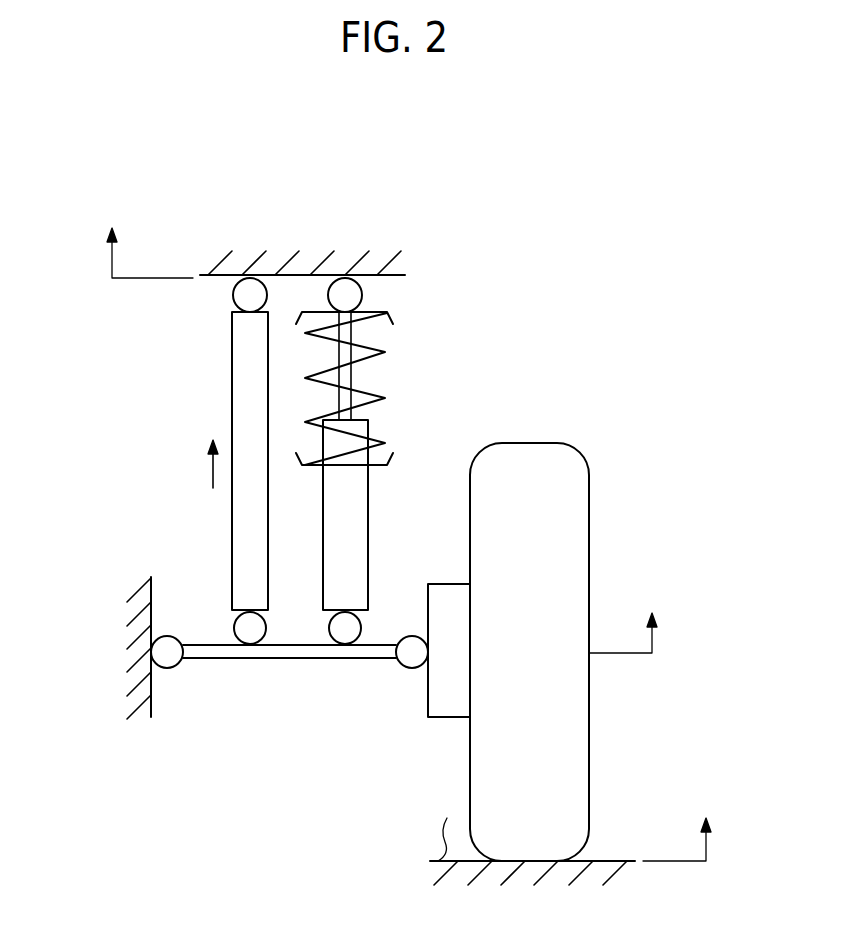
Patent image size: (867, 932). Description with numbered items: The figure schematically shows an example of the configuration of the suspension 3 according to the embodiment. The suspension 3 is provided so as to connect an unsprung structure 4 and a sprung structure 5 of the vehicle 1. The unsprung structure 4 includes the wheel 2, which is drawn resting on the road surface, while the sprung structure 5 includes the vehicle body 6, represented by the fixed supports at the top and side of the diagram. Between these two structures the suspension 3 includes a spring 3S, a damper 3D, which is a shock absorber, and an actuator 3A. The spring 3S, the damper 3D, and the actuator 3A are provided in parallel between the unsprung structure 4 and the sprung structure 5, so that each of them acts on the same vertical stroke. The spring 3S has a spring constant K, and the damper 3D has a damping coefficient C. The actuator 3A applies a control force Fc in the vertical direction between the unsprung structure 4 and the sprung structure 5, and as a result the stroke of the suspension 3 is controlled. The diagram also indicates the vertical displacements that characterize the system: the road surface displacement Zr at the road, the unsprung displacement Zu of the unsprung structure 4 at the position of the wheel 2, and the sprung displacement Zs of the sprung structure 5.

The vehicle 1 is at (590, 226).
The wheel 2 is at (589, 548).
The suspension 3 is at (182, 348).
The actuator 3A is at (232, 405).
The spring 3S is at (370, 391).
The damper 3D is at (368, 550).
The unsprung structure 4 is at (618, 438).
The sprung structure 5 is at (433, 267).
The vehicle body 6 is at (321, 266).